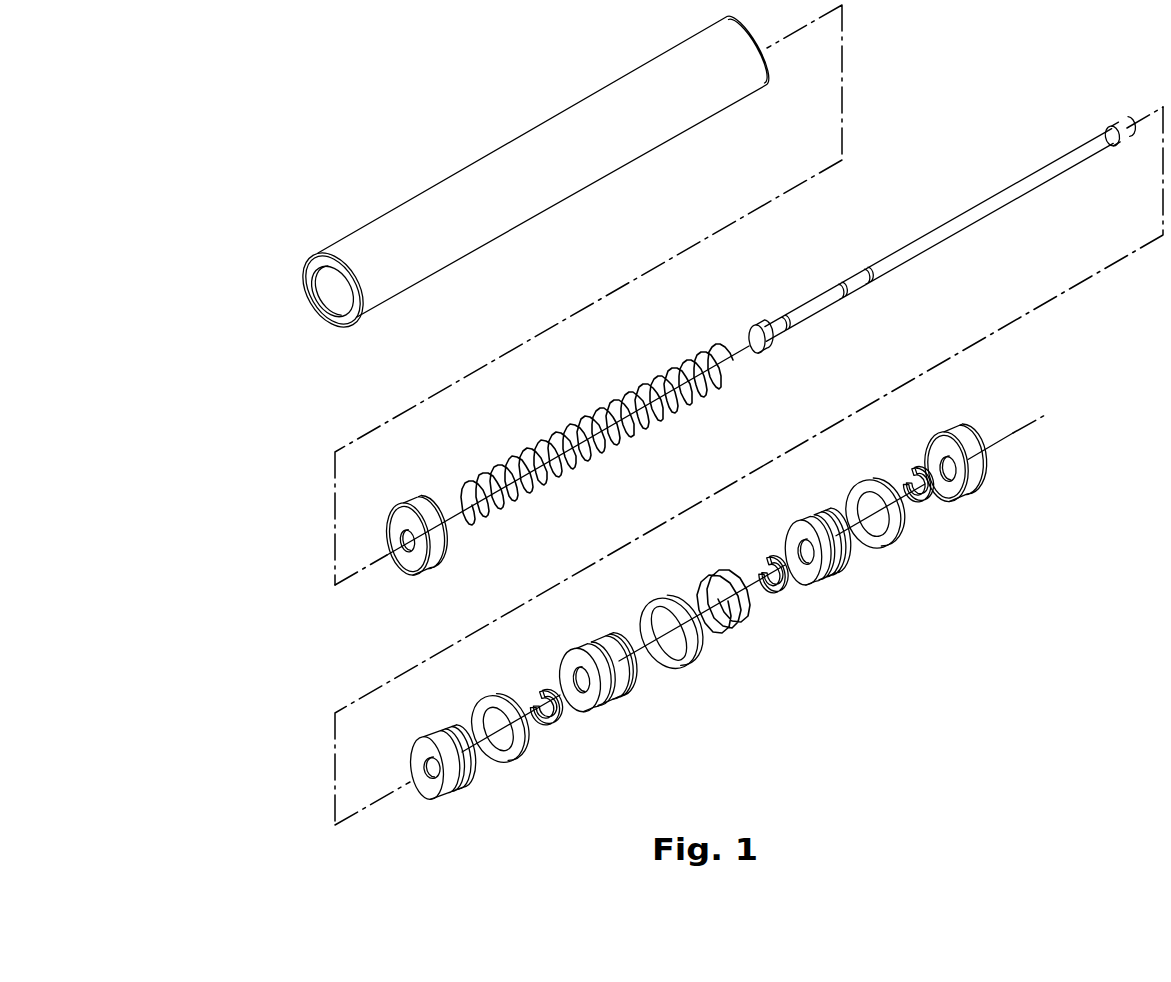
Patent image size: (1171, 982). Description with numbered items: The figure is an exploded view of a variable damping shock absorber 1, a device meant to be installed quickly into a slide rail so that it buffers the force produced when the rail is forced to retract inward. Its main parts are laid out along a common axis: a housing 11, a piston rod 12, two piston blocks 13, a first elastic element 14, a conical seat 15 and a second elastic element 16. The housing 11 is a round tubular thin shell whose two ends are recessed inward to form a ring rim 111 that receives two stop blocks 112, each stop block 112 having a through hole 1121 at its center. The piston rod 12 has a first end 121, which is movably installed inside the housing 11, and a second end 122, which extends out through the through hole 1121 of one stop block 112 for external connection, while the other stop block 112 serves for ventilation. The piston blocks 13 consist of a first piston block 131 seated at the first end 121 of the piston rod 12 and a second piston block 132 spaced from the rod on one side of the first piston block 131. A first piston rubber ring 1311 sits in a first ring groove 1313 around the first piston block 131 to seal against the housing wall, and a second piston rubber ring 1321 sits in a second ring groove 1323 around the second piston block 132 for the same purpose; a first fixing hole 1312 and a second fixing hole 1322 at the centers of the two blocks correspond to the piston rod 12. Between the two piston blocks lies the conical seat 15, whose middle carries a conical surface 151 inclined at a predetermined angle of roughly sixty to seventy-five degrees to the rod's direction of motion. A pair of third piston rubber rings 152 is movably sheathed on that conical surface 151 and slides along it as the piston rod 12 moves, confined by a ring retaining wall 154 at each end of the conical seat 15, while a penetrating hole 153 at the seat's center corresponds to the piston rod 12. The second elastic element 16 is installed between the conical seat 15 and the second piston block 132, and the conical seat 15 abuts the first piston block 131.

The variable damping shock absorber 1 is at (168, 91).
The housing 11 is at (373, 222).
The ring rim 111 is at (316, 300).
The stop block 112 is at (414, 506).
The through hole 1121 is at (407, 557).
The piston rod 12 is at (950, 226).
The first end 121 is at (757, 324).
The second end 122 is at (1111, 122).
The piston block 13 is at (402, 866).
The first piston block 131 is at (436, 790).
The first piston rubber ring 1311 is at (520, 752).
The first fixing hole 1312 is at (425, 765).
The first ring groove 1313 is at (463, 773).
The second piston block 132 is at (820, 572).
The second piston rubber ring 1321 is at (892, 537).
The second fixing hole 1322 is at (800, 548).
The second ring groove 1323 is at (850, 557).
The first elastic element 14 is at (589, 416).
The conical seat 15 is at (592, 703).
The conical surface 151 is at (630, 683).
The third piston rubber ring 152 is at (695, 660).
The penetrating hole 153 is at (577, 678).
The ring retaining wall 154 is at (583, 642).
The second elastic element 16 is at (758, 615).